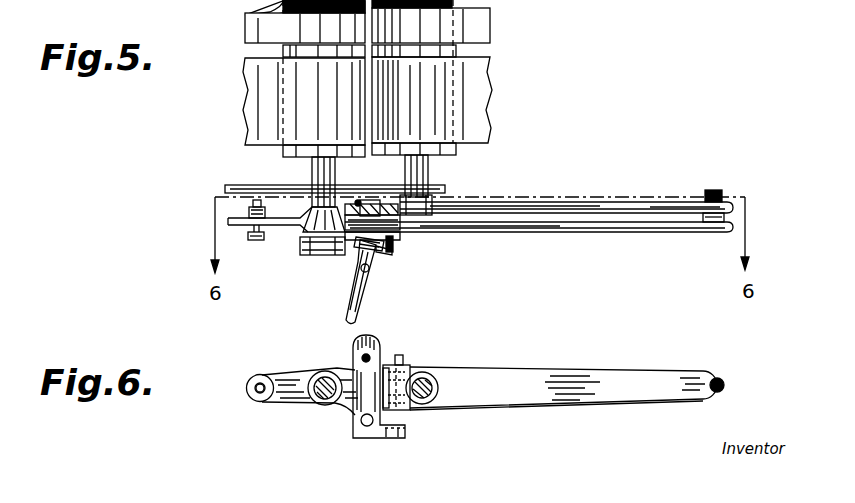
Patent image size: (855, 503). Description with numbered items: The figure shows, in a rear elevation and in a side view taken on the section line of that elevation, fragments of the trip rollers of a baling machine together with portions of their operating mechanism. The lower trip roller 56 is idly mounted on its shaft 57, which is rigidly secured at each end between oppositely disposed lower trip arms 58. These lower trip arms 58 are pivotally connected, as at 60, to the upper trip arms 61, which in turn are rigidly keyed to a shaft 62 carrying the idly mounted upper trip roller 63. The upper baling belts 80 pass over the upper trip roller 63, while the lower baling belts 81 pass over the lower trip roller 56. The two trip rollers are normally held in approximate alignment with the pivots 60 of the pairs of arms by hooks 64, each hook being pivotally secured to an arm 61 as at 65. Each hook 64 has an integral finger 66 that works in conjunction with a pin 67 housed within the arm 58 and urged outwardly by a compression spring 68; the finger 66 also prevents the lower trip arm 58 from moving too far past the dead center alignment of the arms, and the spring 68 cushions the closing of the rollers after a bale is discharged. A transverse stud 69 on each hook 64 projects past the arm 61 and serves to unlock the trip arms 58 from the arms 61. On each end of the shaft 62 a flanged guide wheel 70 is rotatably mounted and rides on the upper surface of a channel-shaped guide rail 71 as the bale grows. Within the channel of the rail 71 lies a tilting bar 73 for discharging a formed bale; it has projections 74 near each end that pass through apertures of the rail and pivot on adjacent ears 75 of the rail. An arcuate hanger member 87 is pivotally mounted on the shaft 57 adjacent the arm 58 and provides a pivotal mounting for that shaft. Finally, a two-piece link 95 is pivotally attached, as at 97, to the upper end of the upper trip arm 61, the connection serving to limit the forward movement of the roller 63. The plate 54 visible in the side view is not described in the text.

In FIG. 6, the arm 54 is at (288, 382).
In FIG. 5, the lower trip roller 56 is at (456, 48).
In FIG. 5, the shaft 57 is at (430, 172).
In FIG. 6, the shaft 57 is at (440, 410).
In FIG. 5, the lower trip arms 58 is at (546, 208).
In FIG. 6, the lower trip arms 58 is at (520, 380).
In FIG. 5, the pivot 60 is at (723, 190).
In FIG. 6, the pivot 60 is at (725, 377).
In FIG. 5, the upper trip arms 61 is at (578, 232).
In FIG. 6, the upper trip arms 61 is at (505, 410).
In FIG. 5, the shaft 62 is at (322, 160).
In FIG. 6, the shaft 62 is at (310, 402).
In FIG. 5, the upper trip roller 63 is at (283, 52).
In FIG. 5, the hook 64 is at (370, 205).
In FIG. 6, the hook 64 is at (398, 360).
In FIG. 5, the pivot 65 is at (358, 200).
In FIG. 6, the pivot 65 is at (362, 423).
In FIG. 5, the finger 66 is at (395, 212).
In FIG. 6, the finger 66 is at (390, 430).
In FIG. 6, the pin 67 is at (403, 357).
In FIG. 6, the compression spring 68 is at (405, 362).
In FIG. 5, the stud 69 is at (350, 253).
In FIG. 6, the stud 69 is at (380, 341).
In FIG. 5, the flanged guide wheel 70 is at (312, 254).
In FIG. 5, the guide rail 71 is at (385, 252).
In FIG. 5, the tilting bar 73 is at (392, 240).
In FIG. 5, the projection 74 is at (352, 299).
In FIG. 5, the ear 75 is at (372, 270).
In FIG. 5, the upper baling belts 80 is at (248, 104).
In FIG. 5, the lower baling belts 81 is at (483, 96).
In FIG. 5, the hanger member 87 is at (225, 188).
In FIG. 5, the link 95 is at (250, 226).
In FIG. 5, the pivot 97 is at (258, 241).
In FIG. 6, the pivot 97 is at (250, 399).